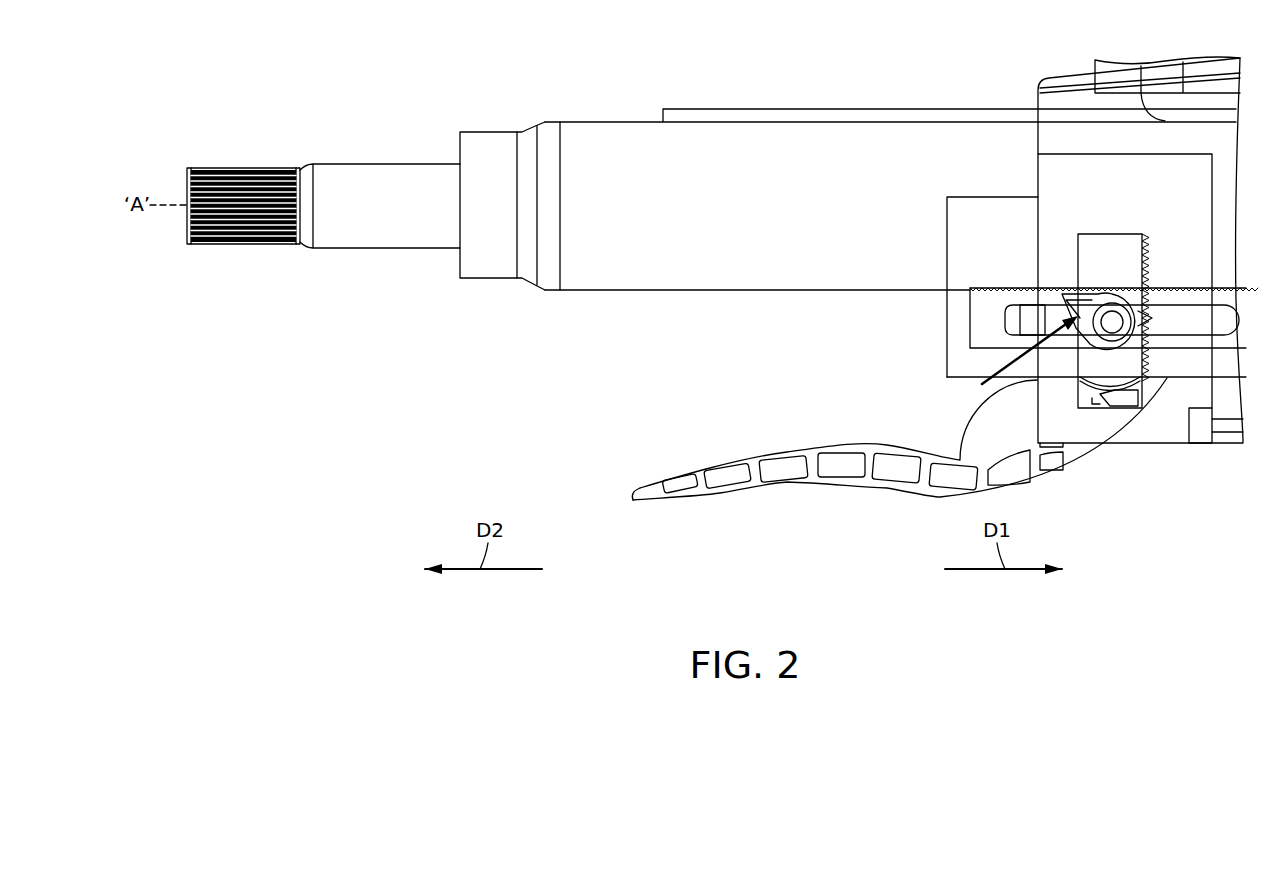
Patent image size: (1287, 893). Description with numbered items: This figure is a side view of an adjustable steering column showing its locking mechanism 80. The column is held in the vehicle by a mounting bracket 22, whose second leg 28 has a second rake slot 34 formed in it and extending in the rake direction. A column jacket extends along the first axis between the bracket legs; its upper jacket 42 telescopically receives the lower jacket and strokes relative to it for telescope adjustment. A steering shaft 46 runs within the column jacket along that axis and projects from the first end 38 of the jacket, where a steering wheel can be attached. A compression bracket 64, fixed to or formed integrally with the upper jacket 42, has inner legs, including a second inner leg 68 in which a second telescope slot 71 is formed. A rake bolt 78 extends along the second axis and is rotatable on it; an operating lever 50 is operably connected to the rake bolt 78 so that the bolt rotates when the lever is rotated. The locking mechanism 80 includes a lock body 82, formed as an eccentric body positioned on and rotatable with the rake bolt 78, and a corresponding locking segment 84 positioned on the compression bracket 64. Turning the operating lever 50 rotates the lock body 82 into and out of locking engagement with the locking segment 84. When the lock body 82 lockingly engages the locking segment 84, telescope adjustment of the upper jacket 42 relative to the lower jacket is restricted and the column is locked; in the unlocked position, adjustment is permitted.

The mounting bracket 22 is at (1060, 101).
The second leg 28 is at (1175, 432).
The second rake slot 34 is at (1092, 398).
The first end 38 is at (471, 256).
The upper jacket 42 is at (604, 129).
The steering shaft 46 is at (351, 236).
The operating lever 50 is at (787, 470).
The compression bracket 64 is at (951, 232).
The second inner leg 68 is at (956, 366).
The second telescope slot 71 is at (1005, 323).
The rake bolt 78 is at (1110, 327).
The locking mechanism 80 is at (982, 384).
The lock body 82 is at (1085, 300).
The locking segment 84 is at (1110, 290).